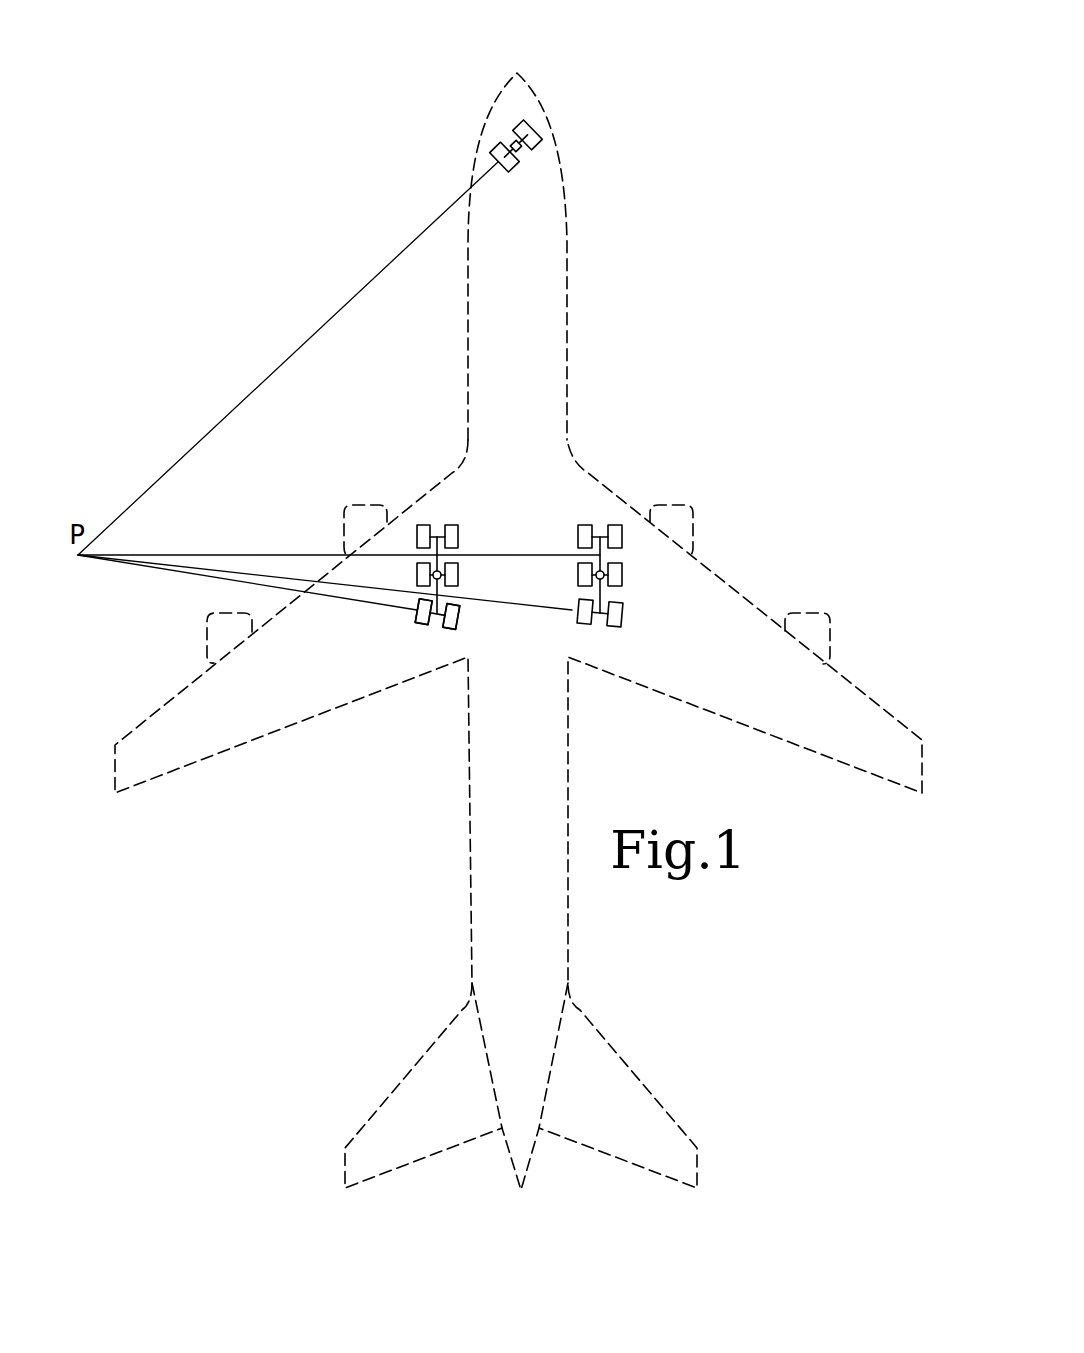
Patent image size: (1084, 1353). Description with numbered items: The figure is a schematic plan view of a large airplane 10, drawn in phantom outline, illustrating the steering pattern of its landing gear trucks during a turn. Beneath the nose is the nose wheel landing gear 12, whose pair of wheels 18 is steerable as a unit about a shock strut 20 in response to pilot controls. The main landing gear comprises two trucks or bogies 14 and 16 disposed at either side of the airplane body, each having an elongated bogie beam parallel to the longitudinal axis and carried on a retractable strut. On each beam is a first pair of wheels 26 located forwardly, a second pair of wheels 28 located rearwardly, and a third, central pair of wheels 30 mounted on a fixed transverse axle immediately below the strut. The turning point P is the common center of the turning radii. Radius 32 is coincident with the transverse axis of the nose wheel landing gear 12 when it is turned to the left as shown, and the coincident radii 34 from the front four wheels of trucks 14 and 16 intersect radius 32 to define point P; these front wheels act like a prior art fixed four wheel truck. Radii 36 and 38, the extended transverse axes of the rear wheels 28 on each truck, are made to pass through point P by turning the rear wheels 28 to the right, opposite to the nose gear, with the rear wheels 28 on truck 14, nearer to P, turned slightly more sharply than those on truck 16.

The airplane 10 is at (567, 329).
The nose wheel landing gear 12 is at (528, 144).
The truck or bogie 14 is at (459, 581).
The truck or bogie 16 is at (599, 546).
The pair of wheels 18 is at (512, 170).
The shock strut 20 is at (512, 142).
The first pair of wheels 26 is at (450, 525).
The second pair of wheels 28 is at (423, 627).
The third pair of wheels 30 is at (575, 578).
The radius 32 is at (310, 335).
The radii 34 is at (298, 555).
The radius 36 is at (353, 585).
The radius 38 is at (390, 603).